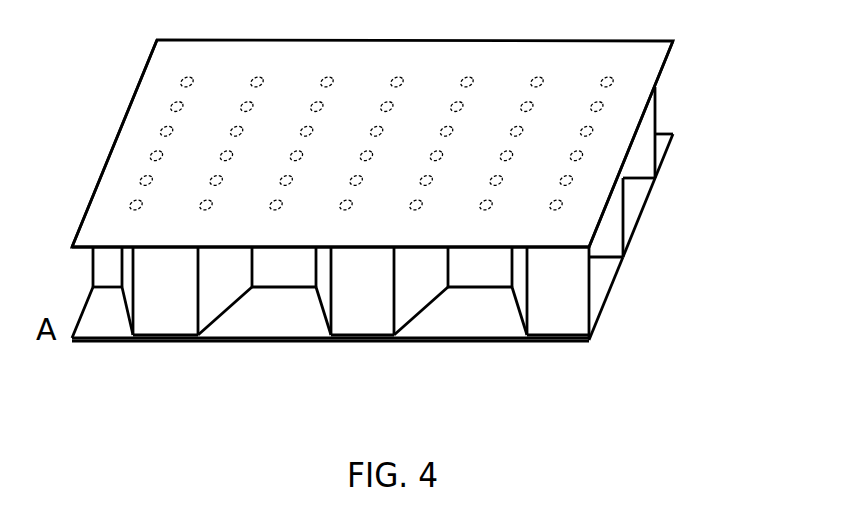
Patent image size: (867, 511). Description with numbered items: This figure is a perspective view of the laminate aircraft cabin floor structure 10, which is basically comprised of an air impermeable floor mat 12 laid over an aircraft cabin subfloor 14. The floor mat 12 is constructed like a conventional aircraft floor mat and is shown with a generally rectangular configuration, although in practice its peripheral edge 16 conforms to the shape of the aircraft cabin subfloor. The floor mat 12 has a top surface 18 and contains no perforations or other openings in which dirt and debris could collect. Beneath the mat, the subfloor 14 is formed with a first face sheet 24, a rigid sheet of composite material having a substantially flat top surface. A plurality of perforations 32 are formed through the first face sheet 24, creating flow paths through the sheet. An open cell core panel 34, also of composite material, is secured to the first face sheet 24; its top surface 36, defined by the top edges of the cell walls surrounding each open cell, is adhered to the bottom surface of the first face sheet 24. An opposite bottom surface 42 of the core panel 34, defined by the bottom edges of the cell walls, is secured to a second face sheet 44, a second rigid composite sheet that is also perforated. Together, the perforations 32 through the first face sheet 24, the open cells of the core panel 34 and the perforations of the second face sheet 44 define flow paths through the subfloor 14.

The laminate aircraft cabin floor structure 10 is at (736, 82).
The air impermeable floor mat 12 is at (648, 48).
The aircraft cabin subfloor 14 is at (703, 173).
The peripheral edge 16 is at (138, 82).
The top surface 18 is at (118, 173).
The first face sheet 24 is at (667, 65).
The perforations 32 is at (328, 74).
The open cell core panel 34 is at (167, 312).
The top surface 36 is at (592, 250).
The bottom surface 42 is at (477, 287).
The second face sheet 44 is at (610, 290).